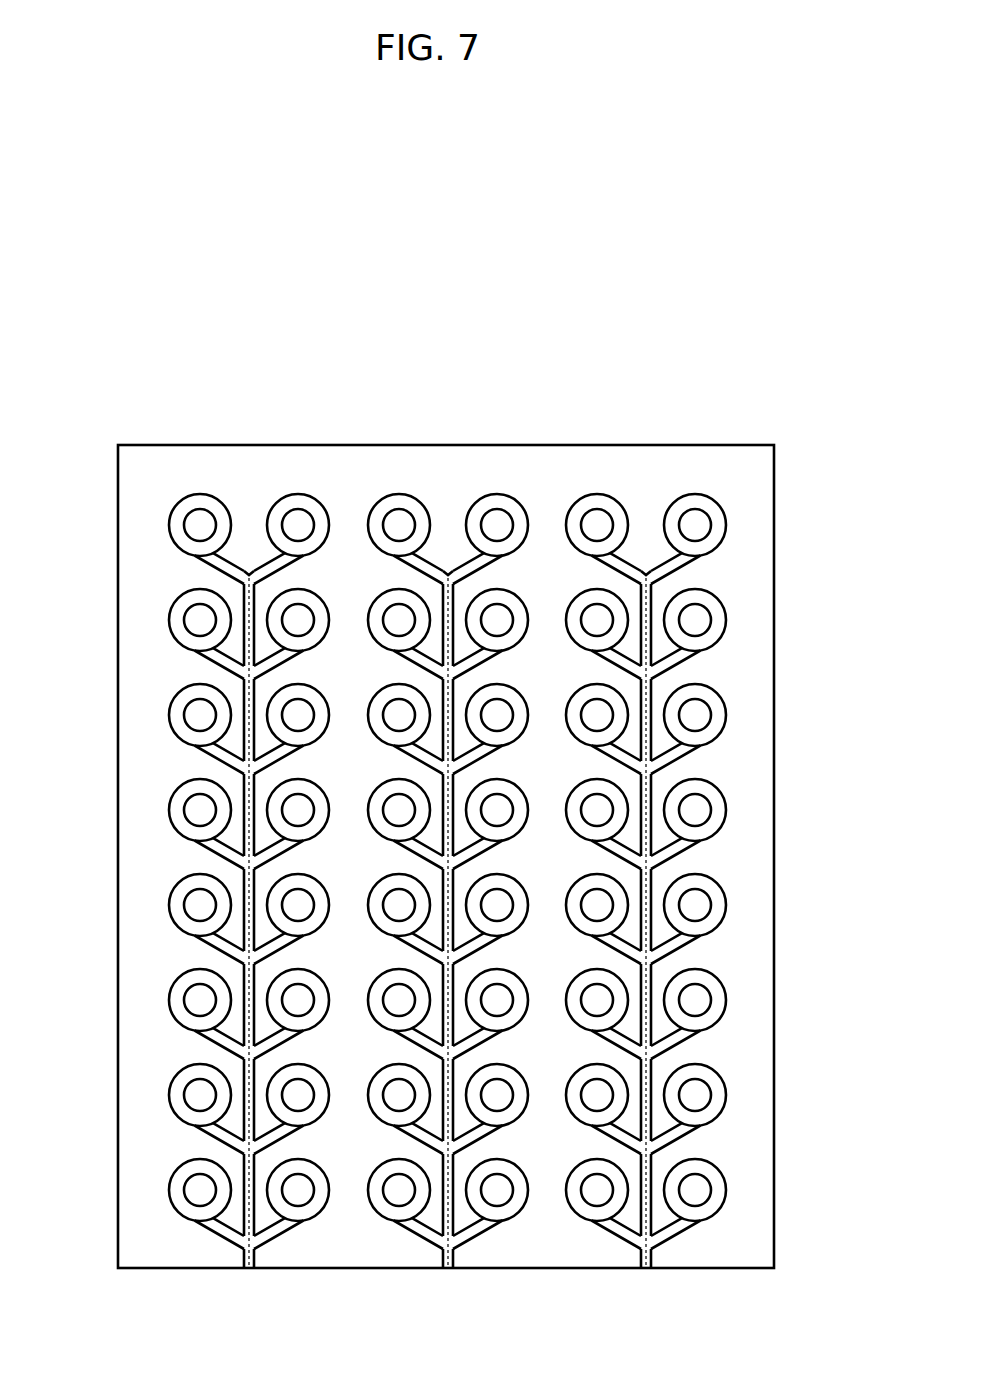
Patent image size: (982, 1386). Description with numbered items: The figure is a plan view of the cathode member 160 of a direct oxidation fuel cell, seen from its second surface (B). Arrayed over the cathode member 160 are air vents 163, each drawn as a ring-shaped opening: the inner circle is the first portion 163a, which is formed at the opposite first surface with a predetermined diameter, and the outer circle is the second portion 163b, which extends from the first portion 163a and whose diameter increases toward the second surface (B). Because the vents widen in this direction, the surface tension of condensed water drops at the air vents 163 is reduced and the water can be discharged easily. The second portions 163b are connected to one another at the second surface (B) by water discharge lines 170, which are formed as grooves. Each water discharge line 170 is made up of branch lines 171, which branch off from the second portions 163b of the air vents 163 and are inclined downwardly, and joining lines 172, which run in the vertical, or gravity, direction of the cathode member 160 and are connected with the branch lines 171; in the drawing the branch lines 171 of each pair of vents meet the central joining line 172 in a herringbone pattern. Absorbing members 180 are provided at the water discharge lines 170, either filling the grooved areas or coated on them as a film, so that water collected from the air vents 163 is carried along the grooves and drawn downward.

The cathode member 160 is at (457, 305).
The air vent 163 is at (732, 689).
The first portion 163a is at (696, 814).
The second portion 163b is at (722, 806).
The water discharge line 170 is at (694, 763).
The branch line 171 is at (630, 963).
The joining line 172 is at (658, 1010).
The absorbing member 180 is at (680, 563).
The second surface B is at (302, 573).